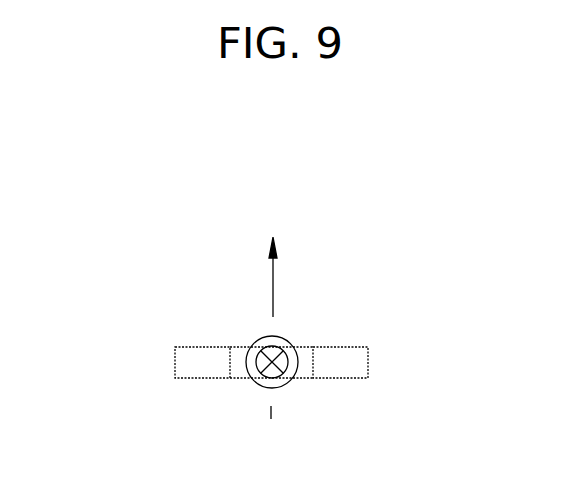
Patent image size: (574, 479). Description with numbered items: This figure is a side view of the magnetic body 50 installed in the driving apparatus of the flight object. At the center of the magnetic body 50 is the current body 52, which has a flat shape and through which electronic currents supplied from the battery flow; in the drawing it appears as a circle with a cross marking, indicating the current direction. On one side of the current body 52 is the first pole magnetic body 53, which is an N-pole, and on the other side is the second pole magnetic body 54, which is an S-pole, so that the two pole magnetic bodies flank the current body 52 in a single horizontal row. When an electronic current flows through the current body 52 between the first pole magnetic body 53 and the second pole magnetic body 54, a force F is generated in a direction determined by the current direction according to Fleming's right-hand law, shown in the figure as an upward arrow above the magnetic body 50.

The magnetic body 50 is at (308, 190).
The current body 52 is at (281, 353).
The first pole magnetic body 53 is at (368, 361).
The second pole magnetic body 54 is at (175, 361).